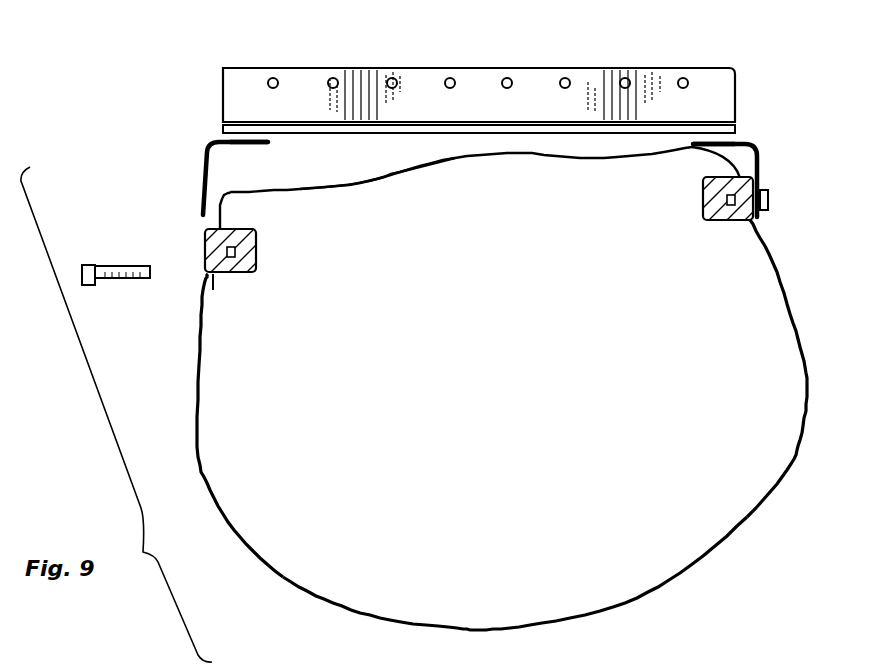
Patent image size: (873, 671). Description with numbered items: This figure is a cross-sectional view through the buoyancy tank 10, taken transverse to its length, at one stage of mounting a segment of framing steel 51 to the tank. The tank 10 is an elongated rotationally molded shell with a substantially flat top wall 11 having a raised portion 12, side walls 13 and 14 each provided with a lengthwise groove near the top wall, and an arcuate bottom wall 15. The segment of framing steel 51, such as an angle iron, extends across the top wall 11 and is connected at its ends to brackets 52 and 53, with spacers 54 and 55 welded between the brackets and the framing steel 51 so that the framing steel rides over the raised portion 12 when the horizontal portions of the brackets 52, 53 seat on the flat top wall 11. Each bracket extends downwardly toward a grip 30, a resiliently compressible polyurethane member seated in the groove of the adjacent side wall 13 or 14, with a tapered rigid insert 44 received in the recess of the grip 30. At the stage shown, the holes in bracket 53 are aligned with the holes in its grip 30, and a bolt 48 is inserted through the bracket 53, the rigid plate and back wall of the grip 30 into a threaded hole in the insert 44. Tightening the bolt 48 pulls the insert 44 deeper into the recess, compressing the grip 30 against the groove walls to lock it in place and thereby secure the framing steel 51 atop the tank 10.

The tank 10 is at (333, 617).
The top wall 11 is at (492, 330).
The raised portion 12 is at (455, 158).
The side wall 13 is at (803, 357).
The side wall 14 is at (193, 437).
The arcuate bottom wall 15 is at (617, 607).
The grip 30 is at (237, 274).
The rigid insert 44 is at (257, 248).
The bolt 48 is at (120, 262).
The framing steel 51 is at (563, 67).
The bracket 52 is at (200, 157).
The bracket 53 is at (758, 152).
The spacer 54 is at (222, 138).
The spacer 55 is at (737, 132).